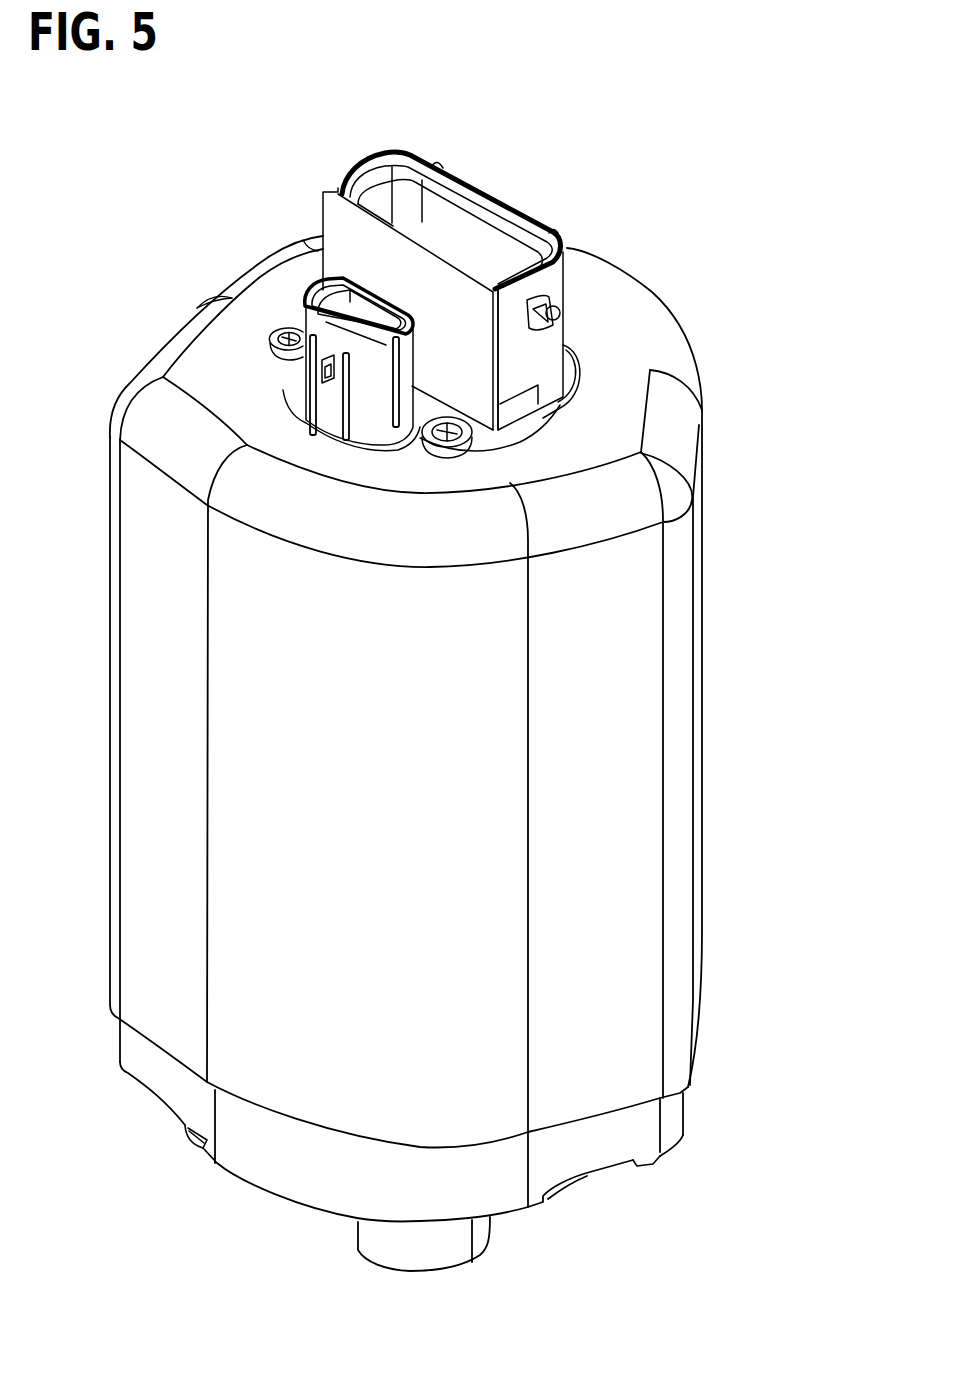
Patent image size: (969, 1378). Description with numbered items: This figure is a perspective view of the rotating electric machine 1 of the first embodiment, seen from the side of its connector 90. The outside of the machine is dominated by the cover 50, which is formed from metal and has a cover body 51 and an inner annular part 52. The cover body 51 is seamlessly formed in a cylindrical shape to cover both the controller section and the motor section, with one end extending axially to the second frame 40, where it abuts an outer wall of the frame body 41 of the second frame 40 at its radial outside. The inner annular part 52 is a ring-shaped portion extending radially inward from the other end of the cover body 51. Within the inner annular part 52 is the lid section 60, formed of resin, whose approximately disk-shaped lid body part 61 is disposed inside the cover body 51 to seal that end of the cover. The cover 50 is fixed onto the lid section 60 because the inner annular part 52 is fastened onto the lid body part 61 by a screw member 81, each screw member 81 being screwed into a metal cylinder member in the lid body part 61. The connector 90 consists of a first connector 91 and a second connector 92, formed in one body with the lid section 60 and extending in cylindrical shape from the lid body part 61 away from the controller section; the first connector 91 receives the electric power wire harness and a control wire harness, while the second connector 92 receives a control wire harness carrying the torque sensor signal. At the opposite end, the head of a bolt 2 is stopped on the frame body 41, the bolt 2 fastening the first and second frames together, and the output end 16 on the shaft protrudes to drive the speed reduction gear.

The rotating electric machine 1 is at (603, 141).
The bolt 2 is at (648, 1165).
The output end 16 is at (478, 1236).
The second frame 40 is at (698, 1101).
The frame body 41 is at (673, 1131).
The cover 50 is at (712, 526).
The cover body 51 is at (682, 634).
The inner annular part 52 is at (594, 365).
The lid section 60 is at (547, 411).
The lid body part 61 is at (513, 431).
The screw member 81 is at (288, 328).
The connector 90 is at (373, 150).
The first connector 91 is at (335, 229).
The second connector 92 is at (300, 377).